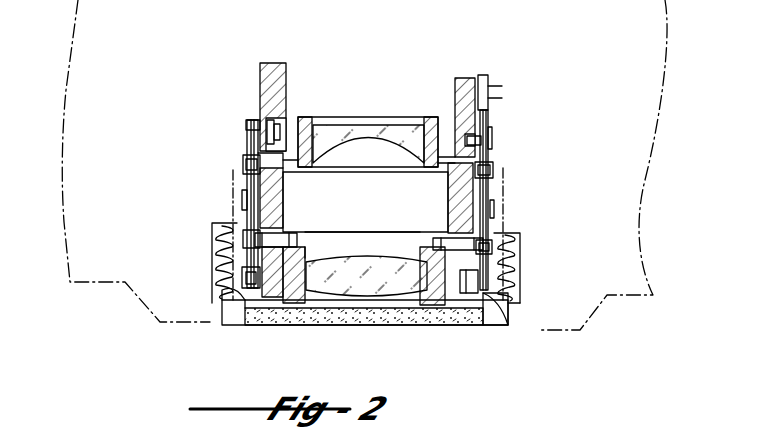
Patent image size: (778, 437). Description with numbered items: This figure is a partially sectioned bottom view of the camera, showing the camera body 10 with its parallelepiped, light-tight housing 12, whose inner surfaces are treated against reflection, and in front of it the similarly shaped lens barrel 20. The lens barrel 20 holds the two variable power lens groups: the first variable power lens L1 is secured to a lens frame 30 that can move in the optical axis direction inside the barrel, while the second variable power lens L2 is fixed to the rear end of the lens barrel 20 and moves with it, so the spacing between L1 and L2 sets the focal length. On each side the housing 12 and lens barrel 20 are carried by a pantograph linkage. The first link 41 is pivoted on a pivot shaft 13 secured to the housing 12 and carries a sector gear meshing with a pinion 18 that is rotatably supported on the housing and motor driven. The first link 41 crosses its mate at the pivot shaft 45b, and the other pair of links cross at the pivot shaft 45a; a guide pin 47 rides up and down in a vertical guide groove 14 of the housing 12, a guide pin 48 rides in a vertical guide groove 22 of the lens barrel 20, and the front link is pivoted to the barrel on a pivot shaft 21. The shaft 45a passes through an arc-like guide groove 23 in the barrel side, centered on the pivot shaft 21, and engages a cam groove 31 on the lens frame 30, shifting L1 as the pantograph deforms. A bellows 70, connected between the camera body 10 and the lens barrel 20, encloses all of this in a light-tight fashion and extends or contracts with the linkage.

The camera body 10 is at (80, 30).
The housing 12 is at (279, 64).
The pivot shaft 13 is at (494, 140).
The guide groove 14 is at (281, 126).
The pinion 18 is at (486, 75).
The lens barrel 20 is at (277, 306).
The pivot shaft 21 is at (240, 318).
The guide groove 22 is at (443, 306).
The guide groove 23 is at (285, 214).
The lens frame 30 is at (300, 312).
The cam groove 31 is at (298, 229).
The first link 41 is at (490, 128).
The pivot shaft 45a is at (234, 221).
The pivot shaft 45b is at (245, 164).
The guide pin 47 is at (256, 128).
The guide pin 48 is at (494, 306).
The bellows 70 is at (213, 270).
The first variable power lens L1 is at (368, 292).
The second variable power lens L2 is at (368, 128).